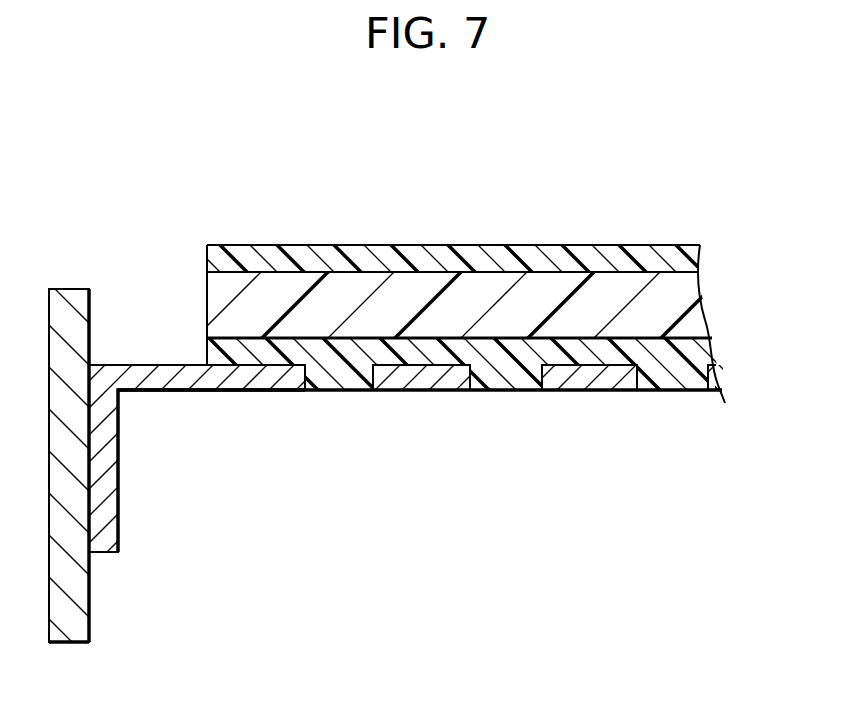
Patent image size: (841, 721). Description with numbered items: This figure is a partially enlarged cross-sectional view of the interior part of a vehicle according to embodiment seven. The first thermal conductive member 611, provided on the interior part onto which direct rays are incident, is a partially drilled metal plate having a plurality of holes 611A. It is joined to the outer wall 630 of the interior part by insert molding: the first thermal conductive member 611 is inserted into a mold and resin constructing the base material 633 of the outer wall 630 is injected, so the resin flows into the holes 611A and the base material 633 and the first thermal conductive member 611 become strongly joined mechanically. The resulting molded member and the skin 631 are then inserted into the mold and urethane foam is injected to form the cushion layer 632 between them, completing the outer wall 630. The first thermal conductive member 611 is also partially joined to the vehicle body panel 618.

The outer wall 630 is at (495, 262).
The skin 631 is at (344, 262).
The cushion layer 632 is at (440, 287).
The base material 633 is at (312, 183).
The first thermal conductive member 611 is at (195, 392).
The holes 611A is at (318, 393).
The vehicle body panel 618 is at (90, 612).